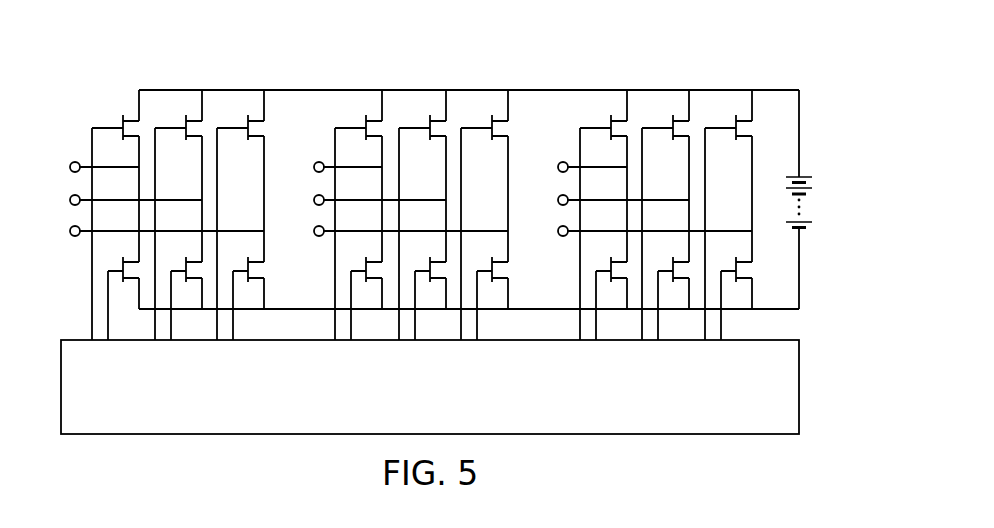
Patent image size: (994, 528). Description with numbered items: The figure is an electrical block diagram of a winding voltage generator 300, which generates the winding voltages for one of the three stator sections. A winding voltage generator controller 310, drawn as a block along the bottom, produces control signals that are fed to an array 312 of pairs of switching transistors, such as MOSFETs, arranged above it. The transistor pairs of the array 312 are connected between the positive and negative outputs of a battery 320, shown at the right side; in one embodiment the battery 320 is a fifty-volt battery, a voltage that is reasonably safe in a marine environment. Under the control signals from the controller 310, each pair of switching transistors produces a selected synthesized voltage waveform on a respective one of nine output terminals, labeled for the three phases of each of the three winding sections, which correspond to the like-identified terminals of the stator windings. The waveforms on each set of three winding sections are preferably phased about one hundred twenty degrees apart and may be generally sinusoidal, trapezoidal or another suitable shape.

The winding voltage generator 300 is at (553, 66).
The array of pairs of switching transistors 312 is at (356, 98).
The winding voltage generator controller 310 is at (413, 416).
The battery 320 is at (790, 177).